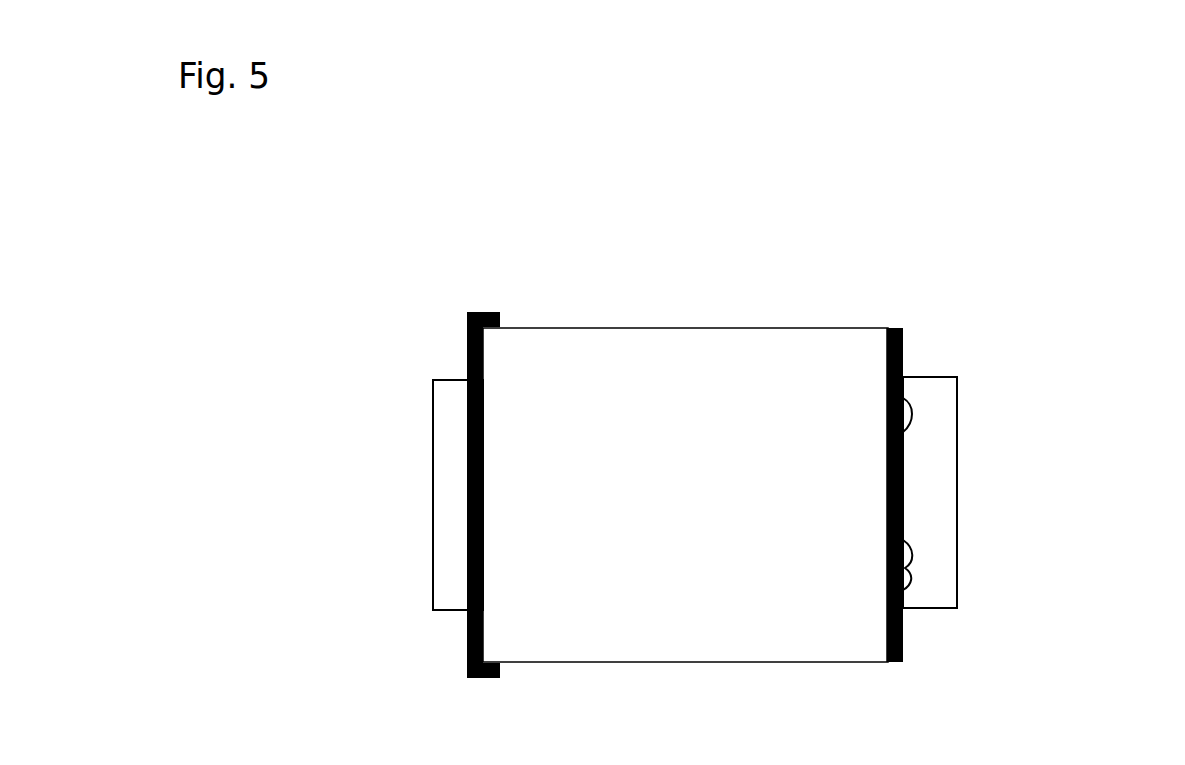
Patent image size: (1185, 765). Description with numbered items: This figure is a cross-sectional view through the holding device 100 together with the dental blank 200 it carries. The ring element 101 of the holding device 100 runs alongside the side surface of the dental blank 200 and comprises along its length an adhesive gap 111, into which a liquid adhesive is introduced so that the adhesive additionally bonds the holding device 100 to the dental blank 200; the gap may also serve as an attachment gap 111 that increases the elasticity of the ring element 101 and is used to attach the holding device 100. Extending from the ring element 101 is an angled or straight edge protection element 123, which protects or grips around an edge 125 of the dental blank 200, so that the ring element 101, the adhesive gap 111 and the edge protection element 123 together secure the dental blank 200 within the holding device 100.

The holding device 100 is at (1012, 492).
The ring element 101 is at (442, 443).
The adhesive gap 111 is at (478, 508).
The edge protection element 123 is at (483, 313).
The edge 125 is at (881, 316).
The dental blank 200 is at (698, 368).